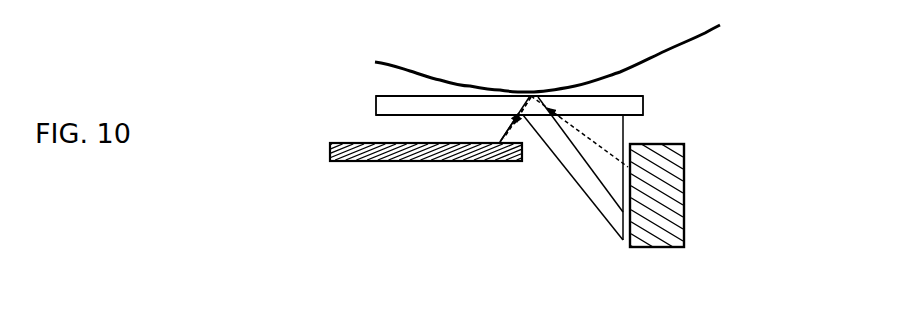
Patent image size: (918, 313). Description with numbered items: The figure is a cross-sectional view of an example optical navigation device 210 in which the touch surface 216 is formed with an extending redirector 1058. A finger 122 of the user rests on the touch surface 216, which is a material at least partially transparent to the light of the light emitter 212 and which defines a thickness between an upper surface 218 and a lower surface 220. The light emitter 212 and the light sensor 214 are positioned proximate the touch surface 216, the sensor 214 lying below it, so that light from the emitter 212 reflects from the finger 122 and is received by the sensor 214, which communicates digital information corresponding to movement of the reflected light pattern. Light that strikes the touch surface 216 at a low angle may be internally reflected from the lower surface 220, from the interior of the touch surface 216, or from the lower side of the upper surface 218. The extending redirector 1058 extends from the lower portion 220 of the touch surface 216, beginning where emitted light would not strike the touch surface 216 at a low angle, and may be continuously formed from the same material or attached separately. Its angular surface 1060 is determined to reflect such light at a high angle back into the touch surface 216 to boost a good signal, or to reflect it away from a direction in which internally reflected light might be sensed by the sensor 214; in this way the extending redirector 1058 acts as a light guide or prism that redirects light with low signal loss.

The finger 122 is at (558, 55).
The optical navigation device 210 is at (386, 212).
The light emitter 212 is at (667, 200).
The light sensor 214 is at (418, 162).
The touch surface 216 is at (372, 104).
The upper surface 218 is at (627, 93).
The lower surface 220 is at (452, 115).
The extending redirector 1058 is at (552, 160).
The angular surface 1060 is at (587, 198).